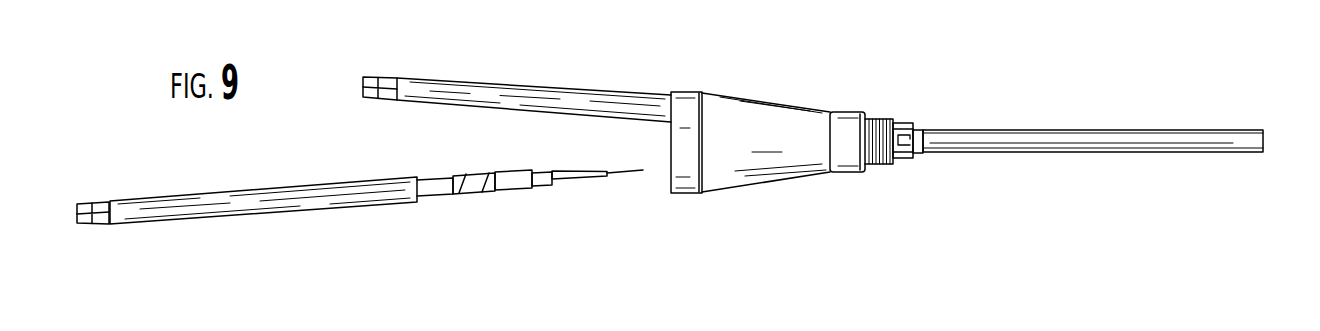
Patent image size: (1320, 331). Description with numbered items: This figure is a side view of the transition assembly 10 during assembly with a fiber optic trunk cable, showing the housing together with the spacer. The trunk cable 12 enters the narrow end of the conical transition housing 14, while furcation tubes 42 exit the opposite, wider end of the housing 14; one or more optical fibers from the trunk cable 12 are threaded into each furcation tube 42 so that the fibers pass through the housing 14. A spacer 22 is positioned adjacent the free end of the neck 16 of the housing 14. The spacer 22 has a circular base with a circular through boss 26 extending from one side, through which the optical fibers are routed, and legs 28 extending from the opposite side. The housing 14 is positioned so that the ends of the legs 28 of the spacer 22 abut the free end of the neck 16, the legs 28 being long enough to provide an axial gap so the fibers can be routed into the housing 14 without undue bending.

The transition assembly 10 is at (1072, 108).
The trunk cable 12 is at (1127, 138).
The conical transition housing 14 is at (801, 98).
The neck 16 is at (884, 118).
The spacer 22 is at (918, 103).
The circular through boss 26 is at (921, 129).
The legs 28 is at (905, 154).
The furcation tubes 42 is at (598, 96).